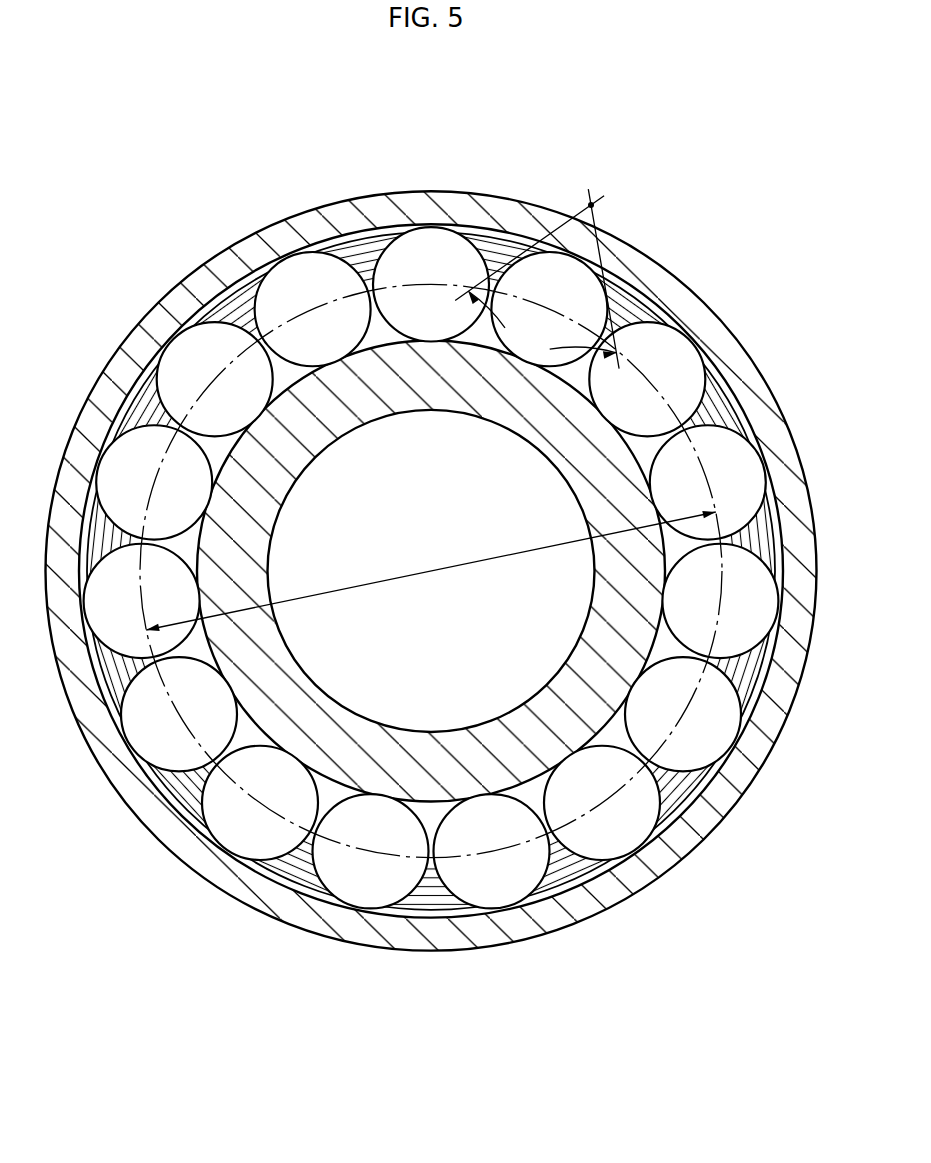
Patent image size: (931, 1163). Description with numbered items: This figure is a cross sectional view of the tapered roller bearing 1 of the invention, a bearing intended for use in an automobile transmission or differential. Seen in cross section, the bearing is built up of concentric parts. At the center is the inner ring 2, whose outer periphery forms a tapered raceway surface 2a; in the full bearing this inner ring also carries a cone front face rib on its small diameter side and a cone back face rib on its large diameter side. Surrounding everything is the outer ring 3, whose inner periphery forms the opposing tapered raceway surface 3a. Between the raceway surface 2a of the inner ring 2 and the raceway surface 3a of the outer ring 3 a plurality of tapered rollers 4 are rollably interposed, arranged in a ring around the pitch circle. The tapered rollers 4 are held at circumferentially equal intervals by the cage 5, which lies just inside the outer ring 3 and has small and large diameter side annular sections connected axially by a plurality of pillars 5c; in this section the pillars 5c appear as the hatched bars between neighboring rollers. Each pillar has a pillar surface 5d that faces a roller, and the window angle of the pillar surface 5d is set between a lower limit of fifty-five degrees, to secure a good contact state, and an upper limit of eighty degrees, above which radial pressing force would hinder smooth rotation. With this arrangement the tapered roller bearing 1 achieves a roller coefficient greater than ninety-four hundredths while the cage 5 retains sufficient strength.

The tapered roller bearing 1 is at (666, 201).
The inner ring 2 is at (438, 400).
The tapered raceway surface 2a is at (607, 413).
The outer ring 3 is at (727, 340).
The tapered raceway surface 3a is at (690, 347).
The tapered rollers 4 is at (448, 245).
The cage 5 is at (431, 528).
The pillars 5c is at (238, 298).
The pillar surface 5d is at (322, 257).